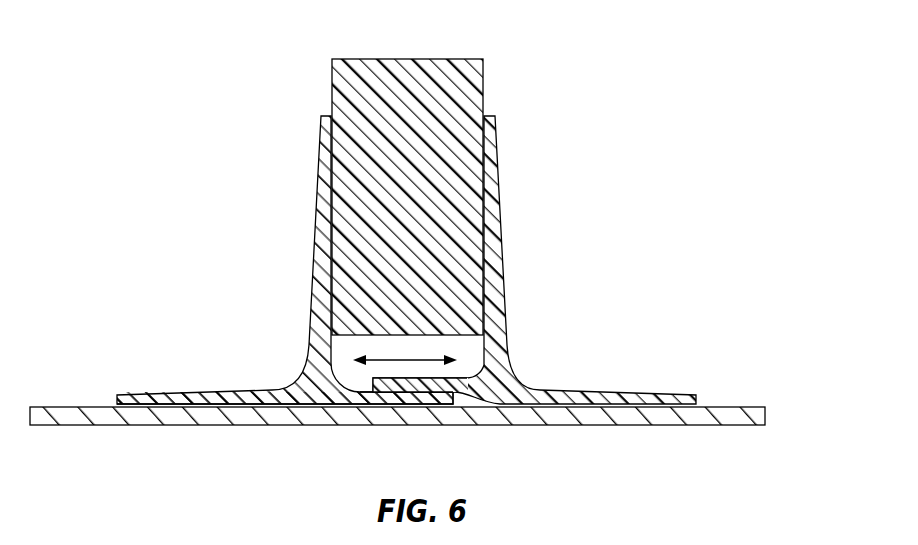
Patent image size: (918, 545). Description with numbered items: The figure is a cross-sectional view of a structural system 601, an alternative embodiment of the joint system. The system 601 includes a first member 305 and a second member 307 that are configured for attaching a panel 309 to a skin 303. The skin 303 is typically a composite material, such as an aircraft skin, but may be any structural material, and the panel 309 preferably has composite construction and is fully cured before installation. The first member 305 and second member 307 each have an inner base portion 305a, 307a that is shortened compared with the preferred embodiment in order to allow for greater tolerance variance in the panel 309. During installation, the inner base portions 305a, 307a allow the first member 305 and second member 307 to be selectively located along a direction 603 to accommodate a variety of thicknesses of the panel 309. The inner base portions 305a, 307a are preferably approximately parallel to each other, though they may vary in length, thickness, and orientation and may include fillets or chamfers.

The system 601 is at (212, 204).
The skin 303 is at (198, 425).
The first member 305 is at (298, 372).
The inner base portion 305a is at (400, 404).
The second member 307 is at (513, 372).
The inner base portion 307a is at (457, 393).
The panel 309 is at (482, 86).
The direction 603 is at (413, 358).